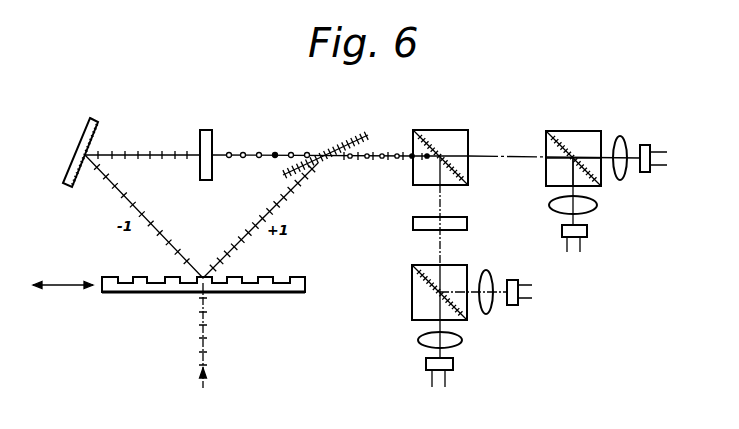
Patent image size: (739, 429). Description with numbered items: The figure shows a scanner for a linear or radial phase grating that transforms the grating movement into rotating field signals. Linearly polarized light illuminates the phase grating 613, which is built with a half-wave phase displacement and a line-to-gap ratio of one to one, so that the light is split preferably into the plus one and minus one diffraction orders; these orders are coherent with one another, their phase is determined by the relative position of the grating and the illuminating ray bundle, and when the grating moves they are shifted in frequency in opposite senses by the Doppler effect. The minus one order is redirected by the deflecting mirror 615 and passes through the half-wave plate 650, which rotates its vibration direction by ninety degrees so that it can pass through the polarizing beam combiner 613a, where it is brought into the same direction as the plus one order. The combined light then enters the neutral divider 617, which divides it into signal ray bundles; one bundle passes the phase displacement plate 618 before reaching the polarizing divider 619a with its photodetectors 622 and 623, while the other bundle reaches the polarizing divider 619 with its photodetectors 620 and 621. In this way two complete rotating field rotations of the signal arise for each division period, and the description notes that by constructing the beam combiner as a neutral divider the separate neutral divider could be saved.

The phase grating 613 is at (140, 289).
The polarizing beam combiner 613a is at (343, 145).
The deflecting mirror 615 is at (80, 145).
The neutral divider 617 is at (440, 140).
The phase displacement plate 618 is at (420, 217).
The polarizing divider 619 is at (418, 300).
The polarizing divider 619a is at (573, 142).
The photodetector 620 is at (425, 364).
The photodetector 621 is at (512, 307).
The photodetector 622 is at (585, 232).
The photodetector 623 is at (645, 145).
The λ/2 plate 650 is at (208, 128).